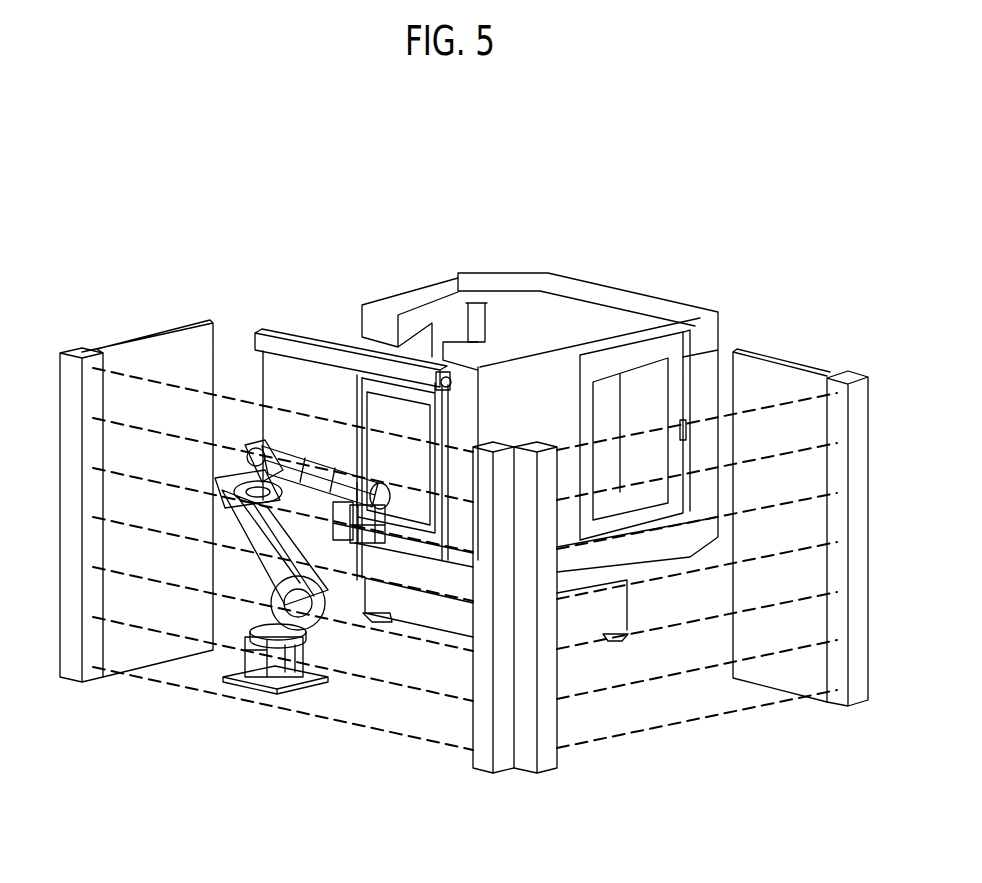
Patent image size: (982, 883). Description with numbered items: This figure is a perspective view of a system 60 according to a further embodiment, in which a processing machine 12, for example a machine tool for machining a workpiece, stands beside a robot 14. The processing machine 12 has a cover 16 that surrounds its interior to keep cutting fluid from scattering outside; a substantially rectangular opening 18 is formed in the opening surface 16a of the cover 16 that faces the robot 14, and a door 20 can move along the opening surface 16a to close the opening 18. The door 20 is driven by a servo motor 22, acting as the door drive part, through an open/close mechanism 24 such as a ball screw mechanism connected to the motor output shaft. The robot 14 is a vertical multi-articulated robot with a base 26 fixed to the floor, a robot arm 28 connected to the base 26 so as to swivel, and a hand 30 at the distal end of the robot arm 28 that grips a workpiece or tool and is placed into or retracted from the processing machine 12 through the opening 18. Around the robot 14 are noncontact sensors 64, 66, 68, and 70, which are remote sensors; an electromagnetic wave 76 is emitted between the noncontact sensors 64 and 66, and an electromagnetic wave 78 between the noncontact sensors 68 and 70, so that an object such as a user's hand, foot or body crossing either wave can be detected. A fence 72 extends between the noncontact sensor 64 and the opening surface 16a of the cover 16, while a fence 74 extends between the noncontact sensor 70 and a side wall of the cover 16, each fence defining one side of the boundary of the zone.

The processing machine 12 is at (486, 494).
The robot 14 is at (300, 534).
The cover 16 is at (555, 405).
The opening surface 16a is at (297, 385).
The opening 18 is at (432, 420).
The door 20 is at (397, 403).
The servo motor 22 is at (455, 383).
The open/close mechanism 24 is at (315, 345).
The base 26 is at (252, 686).
The robot arm 28 is at (263, 530).
The hand 30 is at (356, 543).
The system 60 is at (787, 112).
The noncontact sensor 64 is at (70, 672).
The noncontact sensor 66 is at (482, 772).
The noncontact sensor 68 is at (547, 765).
The noncontact sensor 70 is at (858, 696).
The fence 72 is at (148, 336).
The fence 74 is at (795, 355).
The electromagnetic wave 76 is at (160, 633).
The electromagnetic wave 78 is at (690, 672).